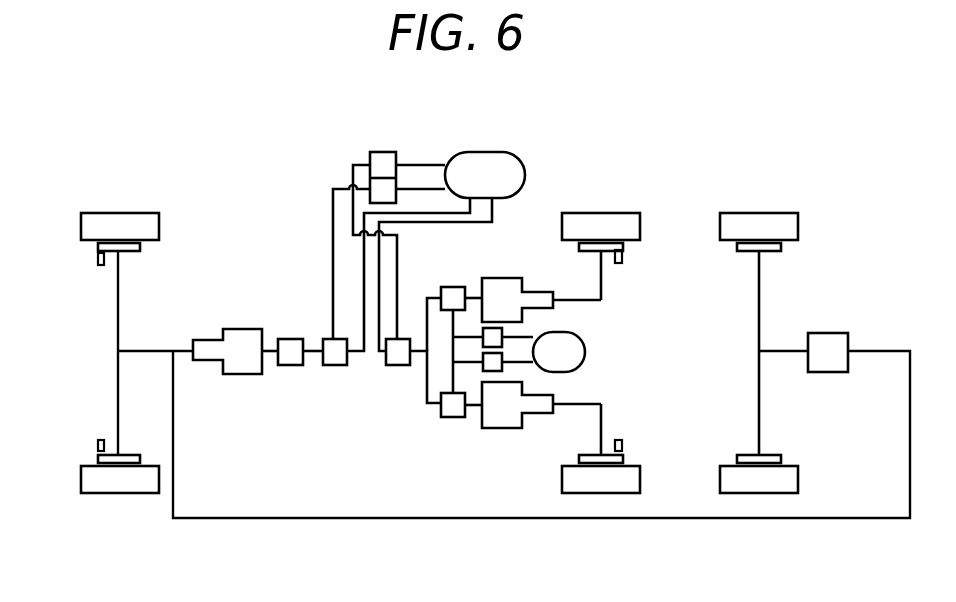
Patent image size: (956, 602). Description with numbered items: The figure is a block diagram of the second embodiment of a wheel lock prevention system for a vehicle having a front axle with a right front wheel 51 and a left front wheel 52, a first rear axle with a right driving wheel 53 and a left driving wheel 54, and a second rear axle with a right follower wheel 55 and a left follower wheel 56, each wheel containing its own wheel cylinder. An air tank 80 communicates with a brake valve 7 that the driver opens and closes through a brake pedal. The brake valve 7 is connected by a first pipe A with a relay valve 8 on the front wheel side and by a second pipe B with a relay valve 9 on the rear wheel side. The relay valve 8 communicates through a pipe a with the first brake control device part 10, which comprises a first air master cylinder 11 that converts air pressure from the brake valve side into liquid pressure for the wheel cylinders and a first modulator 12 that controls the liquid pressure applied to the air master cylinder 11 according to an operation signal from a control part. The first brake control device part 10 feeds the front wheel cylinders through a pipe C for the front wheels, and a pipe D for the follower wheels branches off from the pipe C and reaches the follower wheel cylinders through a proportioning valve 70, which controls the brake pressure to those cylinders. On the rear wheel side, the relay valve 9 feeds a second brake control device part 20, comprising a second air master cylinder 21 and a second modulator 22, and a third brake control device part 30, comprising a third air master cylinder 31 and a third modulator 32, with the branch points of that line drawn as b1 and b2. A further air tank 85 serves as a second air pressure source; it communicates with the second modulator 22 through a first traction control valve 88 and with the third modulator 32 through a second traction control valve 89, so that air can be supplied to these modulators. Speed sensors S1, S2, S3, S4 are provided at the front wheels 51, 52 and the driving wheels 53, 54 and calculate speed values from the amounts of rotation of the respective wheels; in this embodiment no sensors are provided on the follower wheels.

The brake valve 7 is at (388, 150).
The relay valve 8 is at (331, 338).
The relay valve 9 is at (394, 360).
The first brake control device part 10 is at (266, 325).
The first air master cylinder 11 is at (240, 368).
The first modulator 12 is at (290, 360).
The second brake control device part 20 is at (468, 428).
The second air master cylinder 21 is at (505, 428).
The second modulator 22 is at (452, 418).
The third brake control device part 30 is at (476, 278).
The third air master cylinder 31 is at (505, 283).
The third modulator 32 is at (453, 286).
The right front wheel 51 is at (105, 488).
The left front wheel 52 is at (112, 215).
The right driving wheel 53 is at (603, 488).
The left driving wheel 54 is at (605, 220).
The right follower wheel 55 is at (757, 488).
The left follower wheel 56 is at (758, 220).
The proportioning valve 70 is at (828, 340).
The air tank 80 is at (490, 152).
The air tank 85 is at (588, 346).
The first traction control valve 88 is at (505, 367).
The second traction control valve 89 is at (505, 336).
The first speed sensor S1 is at (98, 445).
The second speed sensor S2 is at (98, 258).
The third speed sensor S3 is at (623, 444).
The fourth speed sensor S4 is at (623, 256).
The first pipe A is at (331, 212).
The second pipe B is at (351, 165).
The pipe for the front wheels C is at (158, 350).
The pipe for the follower wheels D is at (355, 520).
The pipe a is at (314, 355).
The junction point b1 is at (427, 397).
The junction point b2 is at (427, 297).